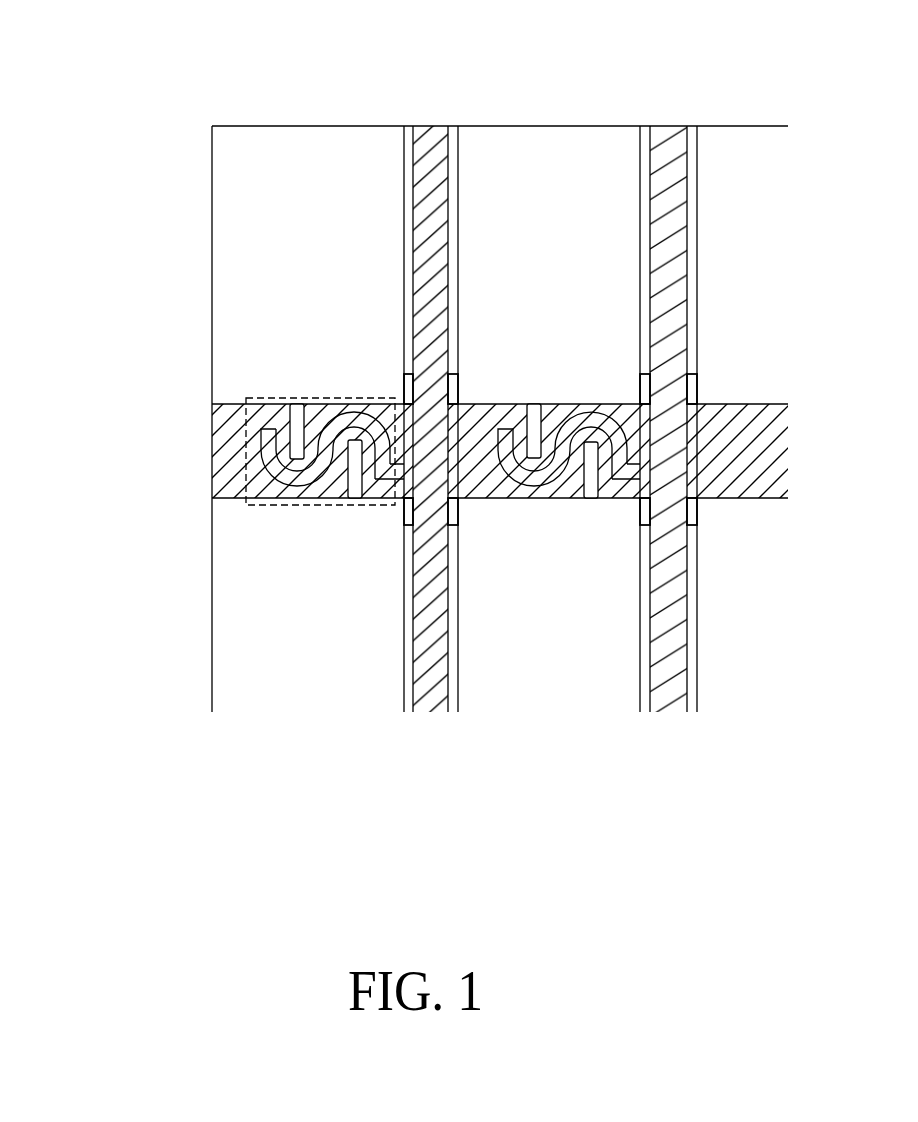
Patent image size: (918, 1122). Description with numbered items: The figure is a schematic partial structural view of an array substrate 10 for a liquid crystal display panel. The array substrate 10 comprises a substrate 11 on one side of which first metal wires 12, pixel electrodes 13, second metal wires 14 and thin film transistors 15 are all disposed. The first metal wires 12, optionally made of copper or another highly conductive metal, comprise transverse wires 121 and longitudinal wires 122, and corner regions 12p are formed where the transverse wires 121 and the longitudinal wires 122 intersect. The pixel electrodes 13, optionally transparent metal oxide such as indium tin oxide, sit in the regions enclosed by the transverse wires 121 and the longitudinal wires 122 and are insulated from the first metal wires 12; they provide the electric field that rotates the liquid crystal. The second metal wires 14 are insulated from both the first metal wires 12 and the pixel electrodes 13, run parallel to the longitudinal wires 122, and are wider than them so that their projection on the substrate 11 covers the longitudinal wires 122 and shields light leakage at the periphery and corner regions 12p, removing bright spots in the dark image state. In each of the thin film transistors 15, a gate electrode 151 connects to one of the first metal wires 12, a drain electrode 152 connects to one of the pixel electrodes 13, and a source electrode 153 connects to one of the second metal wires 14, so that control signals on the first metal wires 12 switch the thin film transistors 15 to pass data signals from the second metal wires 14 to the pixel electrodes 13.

The array substrate 10 is at (530, 77).
The substrate 11 is at (737, 118).
The first metal wires 12 is at (410, 419).
The corner regions 12p is at (458, 378).
The transverse wires 121 is at (222, 472).
The longitudinal wires 122 is at (423, 601).
The pixel electrodes 13 is at (225, 221).
The second metal wires 14 is at (453, 128).
The thin film transistors 15 is at (258, 398).
The gate electrode 151 is at (357, 432).
The drain electrode 152 is at (300, 410).
The source electrode 153 is at (390, 481).